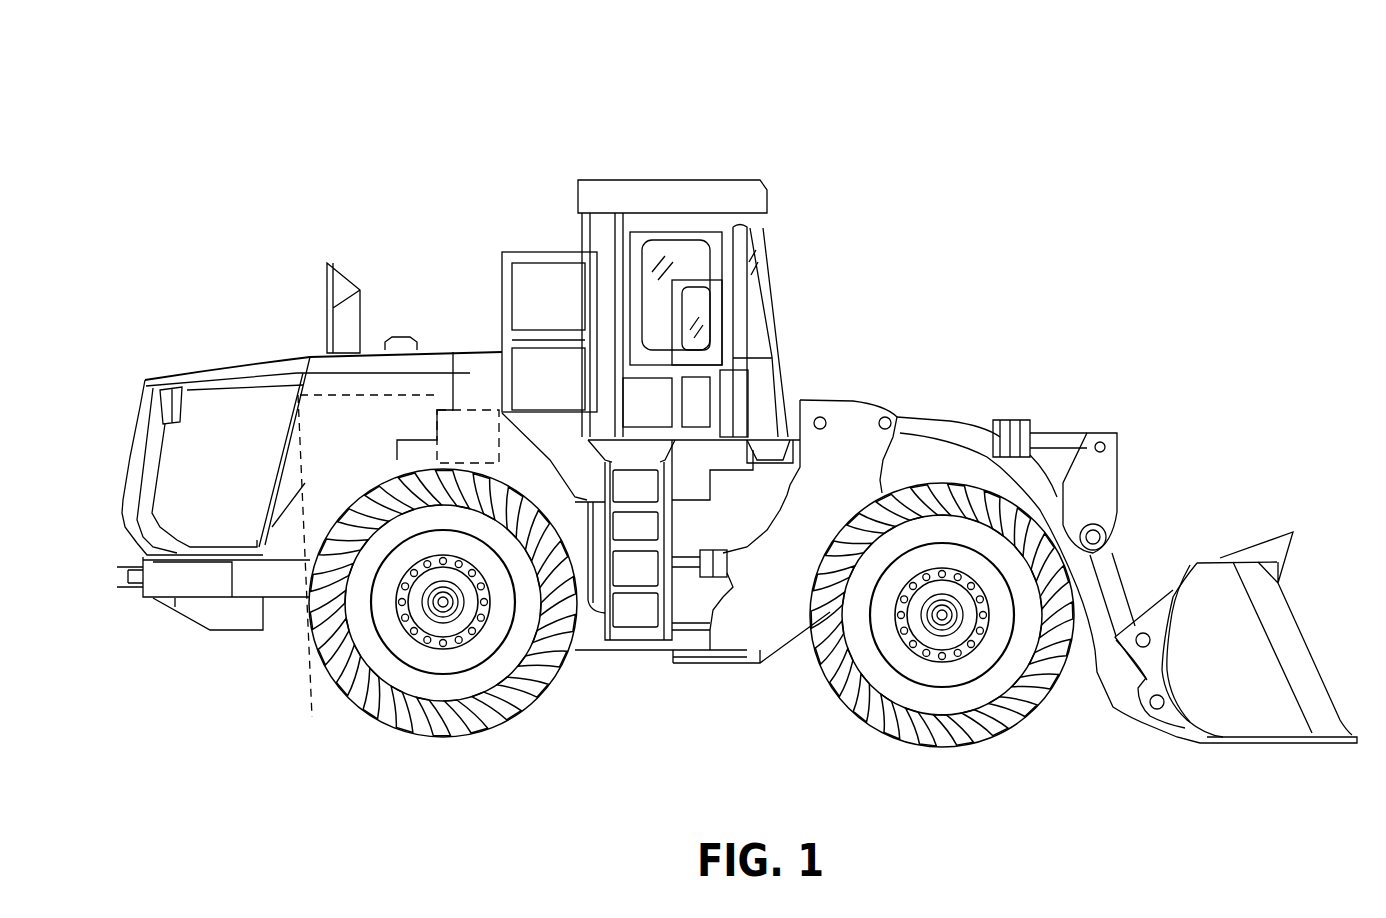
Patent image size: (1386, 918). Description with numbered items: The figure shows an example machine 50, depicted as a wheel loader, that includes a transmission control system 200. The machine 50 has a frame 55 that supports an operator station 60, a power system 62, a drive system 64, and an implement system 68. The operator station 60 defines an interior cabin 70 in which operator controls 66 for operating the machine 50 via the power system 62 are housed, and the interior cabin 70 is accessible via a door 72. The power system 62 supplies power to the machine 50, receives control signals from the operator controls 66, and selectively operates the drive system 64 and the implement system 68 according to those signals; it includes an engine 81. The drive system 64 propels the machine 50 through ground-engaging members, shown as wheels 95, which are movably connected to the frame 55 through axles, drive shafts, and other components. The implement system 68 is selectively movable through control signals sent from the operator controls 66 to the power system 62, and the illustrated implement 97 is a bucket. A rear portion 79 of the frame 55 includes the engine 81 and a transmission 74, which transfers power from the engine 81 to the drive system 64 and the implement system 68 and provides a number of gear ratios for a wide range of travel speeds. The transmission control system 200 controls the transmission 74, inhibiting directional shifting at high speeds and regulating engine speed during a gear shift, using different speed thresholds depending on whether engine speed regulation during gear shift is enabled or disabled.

The machine 50 is at (240, 146).
The frame 55 is at (470, 372).
The operator station 60 is at (640, 178).
The power system 62 is at (243, 357).
The drive system 64 is at (400, 748).
The operator controls 66 is at (758, 343).
The implement system 68 is at (1180, 535).
The interior cabin 70 is at (750, 265).
The door 72 is at (707, 232).
The transmission 74 is at (317, 566).
The rear portion 79 is at (257, 580).
The engine 81 is at (388, 327).
The wheels 95 is at (477, 737).
The implement 97 is at (1300, 623).
The transmission control system 200 is at (490, 408).